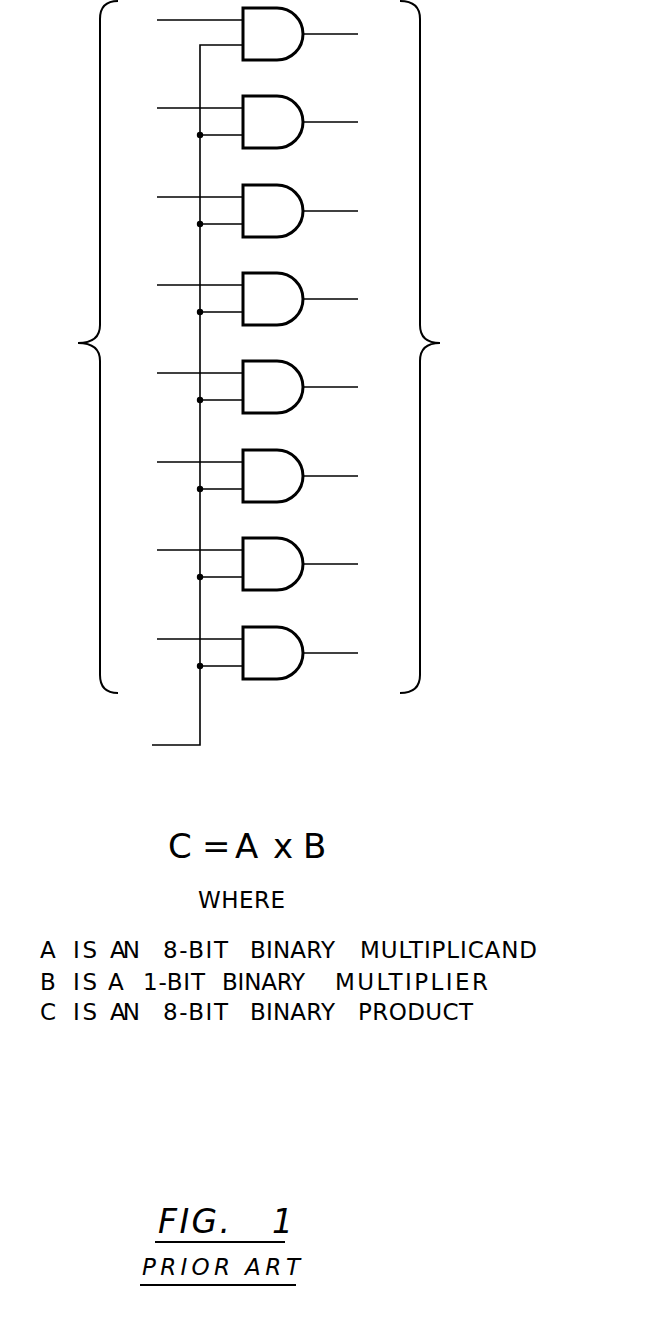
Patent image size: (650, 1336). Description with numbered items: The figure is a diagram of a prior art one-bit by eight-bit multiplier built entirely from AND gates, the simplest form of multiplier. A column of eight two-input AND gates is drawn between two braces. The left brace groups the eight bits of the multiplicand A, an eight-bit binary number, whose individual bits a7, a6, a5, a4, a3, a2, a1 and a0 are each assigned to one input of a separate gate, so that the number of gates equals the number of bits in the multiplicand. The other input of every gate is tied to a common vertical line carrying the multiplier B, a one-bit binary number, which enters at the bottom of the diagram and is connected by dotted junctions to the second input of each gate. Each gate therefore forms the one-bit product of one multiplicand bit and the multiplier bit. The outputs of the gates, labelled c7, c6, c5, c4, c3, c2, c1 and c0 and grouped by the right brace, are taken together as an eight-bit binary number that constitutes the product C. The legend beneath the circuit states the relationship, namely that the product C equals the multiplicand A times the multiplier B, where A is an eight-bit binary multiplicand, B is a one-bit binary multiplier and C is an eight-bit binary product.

The multiplicand A is at (82, 347).
The multiplier B is at (182, 405).
The product C is at (431, 347).
The multiplicand bit a7 is at (182, 23).
The multiplicand bit a6 is at (182, 111).
The multiplicand bit a5 is at (182, 200).
The multiplicand bit a4 is at (182, 288).
The multiplicand bit a3 is at (182, 376).
The multiplicand bit a2 is at (182, 465).
The multiplicand bit a1 is at (182, 553).
The multiplicand bit a0 is at (182, 642).
The product bit c7 is at (315, 34).
The product bit c6 is at (315, 122).
The product bit c5 is at (315, 211).
The product bit c4 is at (315, 299).
The product bit c3 is at (315, 387).
The product bit c2 is at (315, 476).
The product bit c1 is at (315, 564).
The product bit c0 is at (315, 653).